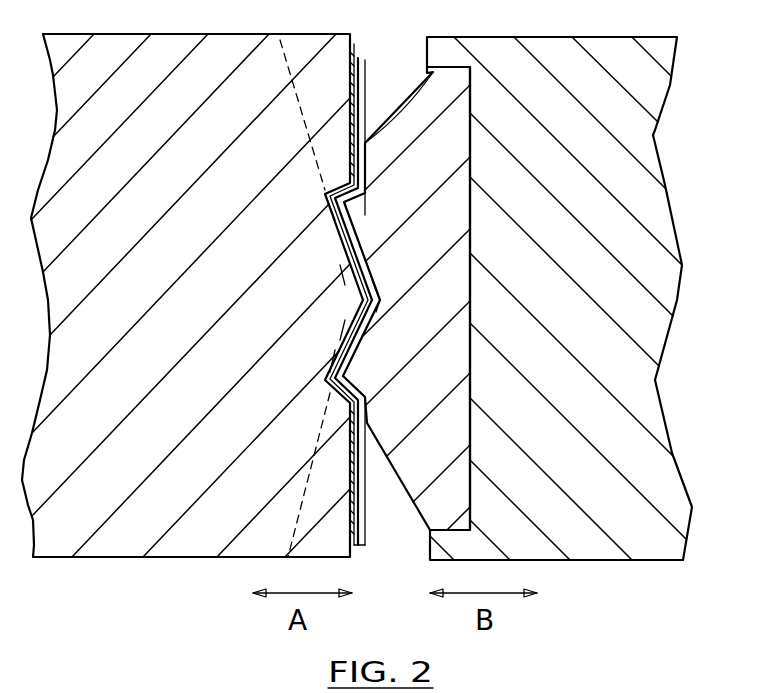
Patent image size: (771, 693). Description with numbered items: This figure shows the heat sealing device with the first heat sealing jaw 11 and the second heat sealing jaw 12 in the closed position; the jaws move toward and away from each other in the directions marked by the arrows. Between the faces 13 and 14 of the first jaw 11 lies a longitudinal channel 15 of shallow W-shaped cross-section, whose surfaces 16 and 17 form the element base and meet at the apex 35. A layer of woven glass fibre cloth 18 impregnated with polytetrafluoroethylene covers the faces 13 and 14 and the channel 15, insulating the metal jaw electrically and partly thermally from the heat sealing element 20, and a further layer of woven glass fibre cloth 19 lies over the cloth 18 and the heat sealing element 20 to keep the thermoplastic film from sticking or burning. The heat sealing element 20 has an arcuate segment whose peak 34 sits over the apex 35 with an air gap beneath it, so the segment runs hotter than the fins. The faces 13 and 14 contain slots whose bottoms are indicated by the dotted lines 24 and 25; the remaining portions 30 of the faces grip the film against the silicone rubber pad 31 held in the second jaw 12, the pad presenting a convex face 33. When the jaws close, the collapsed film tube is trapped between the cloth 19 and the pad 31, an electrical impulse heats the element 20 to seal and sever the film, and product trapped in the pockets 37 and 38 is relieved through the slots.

The first heat sealing jaw 11 is at (154, 451).
The second heat sealing jaw 12 is at (591, 451).
The face 13 is at (352, 520).
The face 14 is at (352, 97).
The longitudinal channel 15 is at (340, 325).
The surface of channel 16 is at (330, 361).
The surface of channel 17 is at (333, 237).
The layer of woven glass fibre cloth 18 is at (362, 545).
The further layer of woven glass fibre cloth 19 is at (366, 520).
The heat sealing element 20 is at (384, 282).
The dotted line 24 is at (303, 480).
The dotted line 25 is at (290, 78).
The portions 30 is at (350, 190).
The silicone rubber pad 31 is at (454, 451).
The convex face 33 is at (372, 141).
The peak 34 is at (385, 305).
The apex 35 is at (340, 274).
The pocket 37 is at (368, 212).
The pocket 38 is at (365, 379).